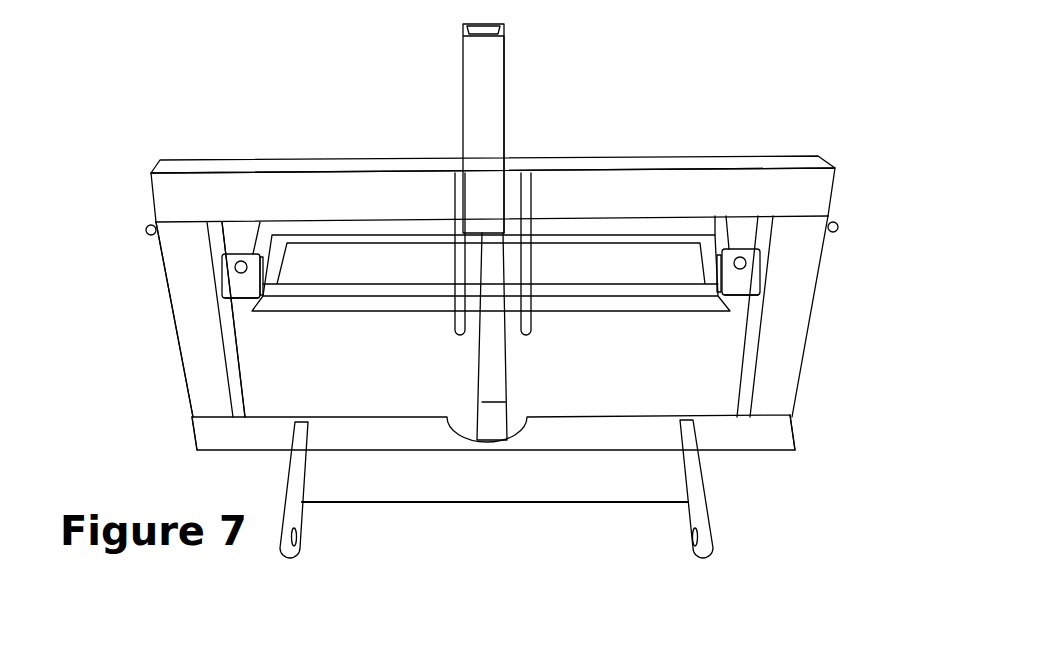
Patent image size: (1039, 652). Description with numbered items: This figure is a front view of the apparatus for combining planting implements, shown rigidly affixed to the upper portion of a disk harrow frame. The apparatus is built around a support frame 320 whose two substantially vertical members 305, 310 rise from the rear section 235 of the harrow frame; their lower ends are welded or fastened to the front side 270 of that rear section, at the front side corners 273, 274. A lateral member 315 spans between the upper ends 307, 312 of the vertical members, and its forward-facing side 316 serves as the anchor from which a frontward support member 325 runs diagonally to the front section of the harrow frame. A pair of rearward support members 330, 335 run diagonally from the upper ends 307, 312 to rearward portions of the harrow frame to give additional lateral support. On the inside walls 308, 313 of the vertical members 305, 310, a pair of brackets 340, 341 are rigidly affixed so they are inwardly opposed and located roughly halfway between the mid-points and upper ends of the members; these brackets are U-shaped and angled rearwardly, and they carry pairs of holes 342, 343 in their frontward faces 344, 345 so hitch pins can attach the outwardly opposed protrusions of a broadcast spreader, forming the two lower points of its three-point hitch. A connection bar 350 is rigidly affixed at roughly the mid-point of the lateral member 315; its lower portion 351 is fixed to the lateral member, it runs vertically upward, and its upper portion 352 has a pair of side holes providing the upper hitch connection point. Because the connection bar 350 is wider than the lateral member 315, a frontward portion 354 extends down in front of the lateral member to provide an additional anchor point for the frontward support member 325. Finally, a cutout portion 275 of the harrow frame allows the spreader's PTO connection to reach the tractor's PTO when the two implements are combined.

The rear section 235 is at (242, 366).
The front side 270 is at (578, 432).
The front side corner 273 is at (195, 452).
The front side corner 274 is at (795, 455).
The cutout portion 275 is at (483, 442).
The substantially vertical member 305 is at (205, 383).
The upper end 307 is at (183, 221).
The inside wall 308 is at (235, 345).
The substantially vertical member 310 is at (777, 390).
The upper end 312 is at (800, 214).
The inside wall 313 is at (744, 363).
The lateral member 315 is at (724, 76).
The forward-facing side 316 is at (648, 98).
The support frame 320 is at (454, 261).
The frontward support member 325 is at (536, 264).
The rearward support member 330 is at (138, 234).
The rearward support member 335 is at (838, 227).
The bracket 340 is at (231, 298).
The bracket 341 is at (760, 297).
The pair of holes 342 is at (227, 272).
The pair of holes 343 is at (750, 263).
The frontward face 344 is at (238, 293).
The frontward face 345 is at (748, 292).
The connection bar 350 is at (474, 91).
The lower portion 351 is at (487, 145).
The upper portion 352 is at (482, 43).
The frontward portion 354 is at (485, 199).